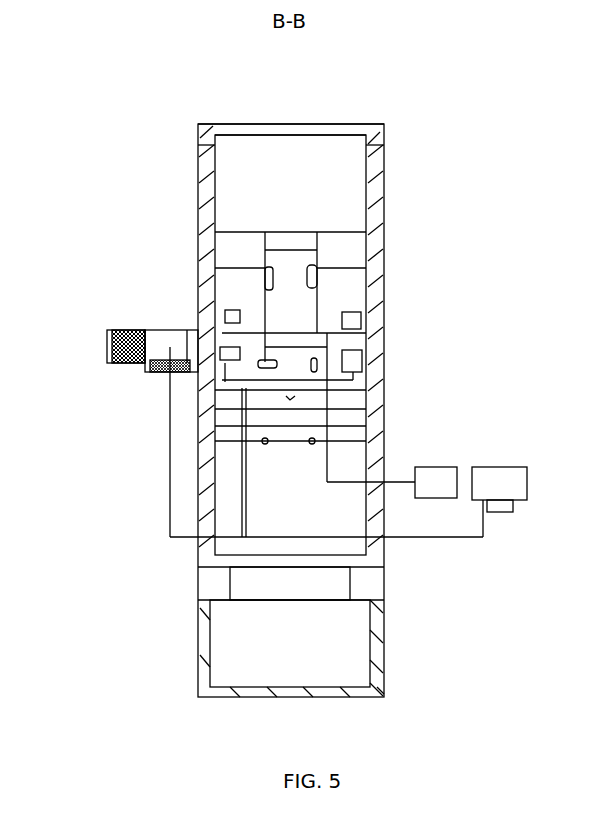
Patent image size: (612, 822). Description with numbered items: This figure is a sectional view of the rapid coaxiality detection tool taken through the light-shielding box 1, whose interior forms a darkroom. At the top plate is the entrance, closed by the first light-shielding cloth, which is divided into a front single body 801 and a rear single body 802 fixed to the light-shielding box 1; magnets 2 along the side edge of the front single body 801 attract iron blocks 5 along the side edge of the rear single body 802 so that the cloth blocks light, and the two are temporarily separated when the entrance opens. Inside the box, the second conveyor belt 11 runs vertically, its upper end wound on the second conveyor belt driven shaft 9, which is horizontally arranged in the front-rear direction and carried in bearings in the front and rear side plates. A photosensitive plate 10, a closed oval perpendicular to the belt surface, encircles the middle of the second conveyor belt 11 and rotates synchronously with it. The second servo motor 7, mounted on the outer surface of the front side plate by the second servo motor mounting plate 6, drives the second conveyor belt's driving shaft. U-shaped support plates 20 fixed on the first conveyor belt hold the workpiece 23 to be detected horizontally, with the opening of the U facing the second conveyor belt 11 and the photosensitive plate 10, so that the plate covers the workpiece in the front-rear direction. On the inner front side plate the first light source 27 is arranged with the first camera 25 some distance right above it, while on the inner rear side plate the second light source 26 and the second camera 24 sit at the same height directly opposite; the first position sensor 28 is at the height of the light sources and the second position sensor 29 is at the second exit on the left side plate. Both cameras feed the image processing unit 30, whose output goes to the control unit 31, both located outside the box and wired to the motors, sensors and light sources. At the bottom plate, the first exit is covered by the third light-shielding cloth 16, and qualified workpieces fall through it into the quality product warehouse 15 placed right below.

The light-shielding box 1 is at (198, 220).
The magnets 2 is at (286, 124).
The iron blocks 5 is at (298, 124).
The second servo motor mounting plate 6 is at (107, 348).
The second servo motor 7 is at (160, 340).
The second conveyor belt driven shaft 9 is at (343, 240).
The photosensitive plate 10 is at (267, 292).
The second conveyor belt 11 is at (302, 237).
The quality product warehouse 15 is at (387, 687).
The third light-shielding cloth 16 is at (317, 567).
The support plates 20 is at (320, 285).
The workpiece to be detected 23 is at (317, 268).
The second camera 24 is at (361, 318).
The first camera 25 is at (225, 312).
The second light source 26 is at (352, 352).
The first light source 27 is at (222, 355).
The first position sensor 28 is at (355, 378).
The second position sensor 29 is at (297, 396).
The image processing unit 30 is at (430, 483).
The control unit 31 is at (497, 490).
The front single body of the first light-shielding cloth 801 is at (227, 125).
The rear single body of the first light-shielding cloth 802 is at (330, 126).